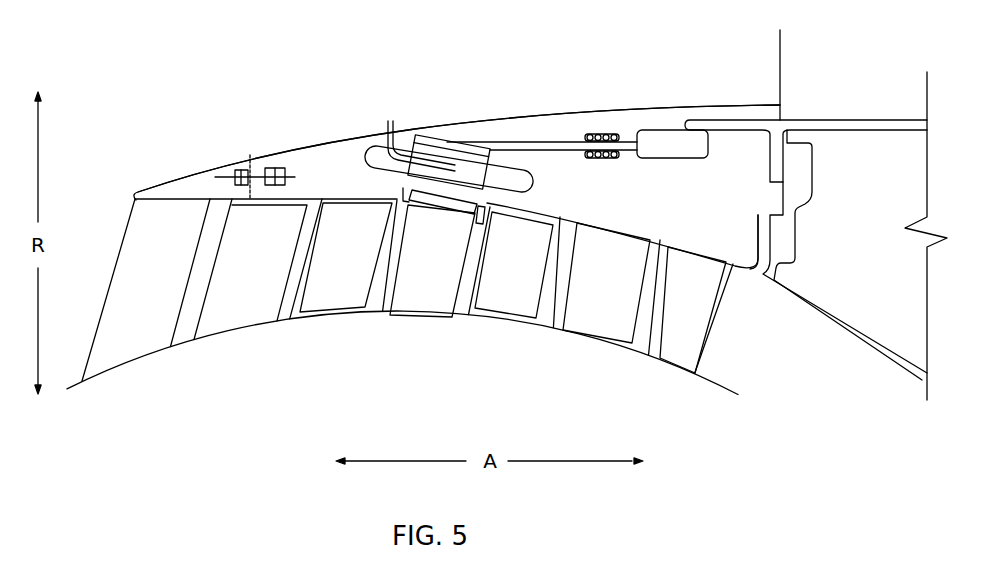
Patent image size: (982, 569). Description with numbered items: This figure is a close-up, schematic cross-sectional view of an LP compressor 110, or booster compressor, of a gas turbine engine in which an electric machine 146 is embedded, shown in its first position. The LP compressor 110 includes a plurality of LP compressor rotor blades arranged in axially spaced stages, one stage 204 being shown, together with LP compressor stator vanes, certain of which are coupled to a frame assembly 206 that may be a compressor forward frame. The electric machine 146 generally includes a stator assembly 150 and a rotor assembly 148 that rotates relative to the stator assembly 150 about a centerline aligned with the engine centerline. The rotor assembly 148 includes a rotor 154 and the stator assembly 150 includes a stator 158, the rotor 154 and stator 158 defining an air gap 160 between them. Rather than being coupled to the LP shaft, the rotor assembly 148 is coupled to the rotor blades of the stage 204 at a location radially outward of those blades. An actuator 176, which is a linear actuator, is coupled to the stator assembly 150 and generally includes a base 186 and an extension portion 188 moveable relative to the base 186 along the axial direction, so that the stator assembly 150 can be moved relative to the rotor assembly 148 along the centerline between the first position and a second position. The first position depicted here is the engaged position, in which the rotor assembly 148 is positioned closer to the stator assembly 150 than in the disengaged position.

The LP compressor 110 is at (287, 154).
The electric machine 146 is at (474, 121).
The stator assembly 150 is at (404, 126).
The air gap 160 is at (400, 183).
The stator 158 is at (473, 172).
The extension portion 188 is at (564, 142).
The actuator 176 is at (643, 107).
The frame assembly 206 is at (828, 160).
The base 186 is at (679, 152).
The rotor assembly 148 is at (481, 225).
The rotor 154 is at (433, 200).
The stage 204 is at (437, 312).